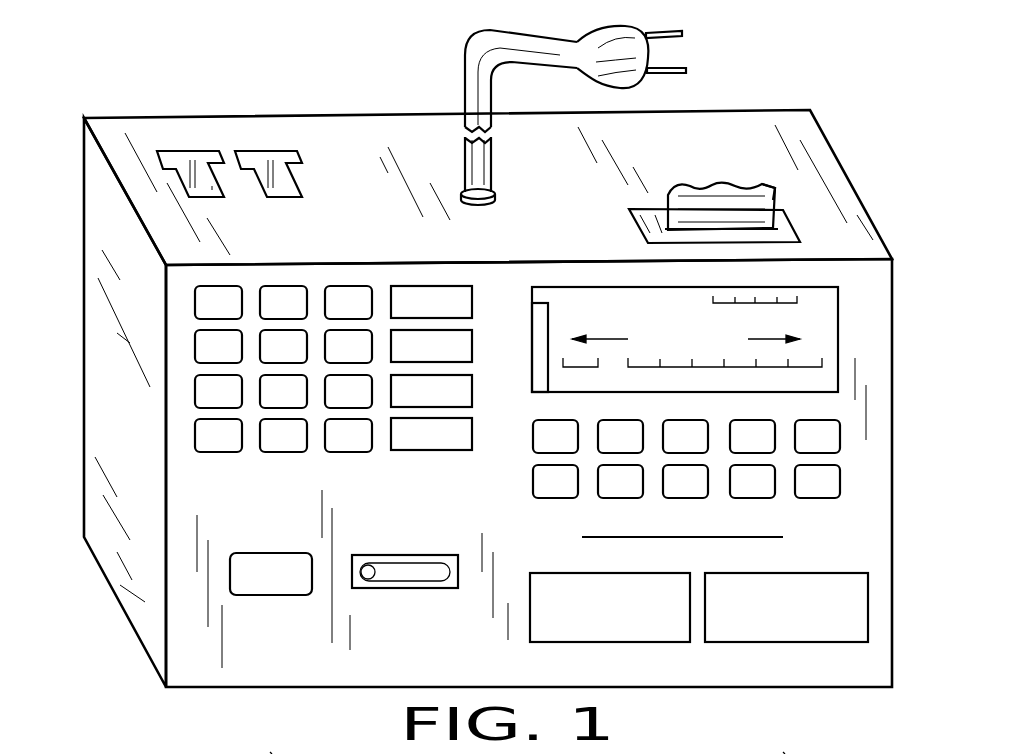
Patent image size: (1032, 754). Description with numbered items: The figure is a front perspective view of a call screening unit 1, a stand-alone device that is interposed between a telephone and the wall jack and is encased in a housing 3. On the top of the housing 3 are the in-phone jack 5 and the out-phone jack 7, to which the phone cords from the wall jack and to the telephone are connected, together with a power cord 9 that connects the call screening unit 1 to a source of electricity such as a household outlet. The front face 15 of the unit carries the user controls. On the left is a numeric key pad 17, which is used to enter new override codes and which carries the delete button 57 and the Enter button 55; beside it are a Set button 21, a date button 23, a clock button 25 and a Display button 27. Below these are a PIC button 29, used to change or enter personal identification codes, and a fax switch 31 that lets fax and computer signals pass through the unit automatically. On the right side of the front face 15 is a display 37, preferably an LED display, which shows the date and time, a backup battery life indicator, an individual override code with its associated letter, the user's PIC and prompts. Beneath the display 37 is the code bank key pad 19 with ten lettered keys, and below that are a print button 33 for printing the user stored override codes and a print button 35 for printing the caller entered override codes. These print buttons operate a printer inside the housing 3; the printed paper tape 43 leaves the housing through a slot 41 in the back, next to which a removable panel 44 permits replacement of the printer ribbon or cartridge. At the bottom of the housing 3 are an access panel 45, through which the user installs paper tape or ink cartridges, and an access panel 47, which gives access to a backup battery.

The call screening unit 1 is at (790, 88).
The housing 3 is at (827, 122).
The in-phone jack 5 is at (181, 148).
The out-phone jack 7 is at (243, 150).
The power cord 9 is at (470, 55).
The front face 15 is at (180, 331).
The numeric key pad 17 is at (290, 364).
The code bank key pad 19 is at (523, 459).
The Set button 21 is at (472, 390).
The date button 23 is at (472, 302).
The clock button 25 is at (472, 348).
The Display button 27 is at (472, 434).
The PIC button 29 is at (279, 553).
The fax switch 31 is at (398, 555).
The print button 33 is at (570, 573).
The print button 35 is at (801, 573).
The display 37 is at (838, 325).
The slot 41 is at (785, 221).
The printed paper tape 43 is at (775, 196).
The removable panel 44 is at (808, 238).
The access panel 45 is at (785, 753).
The access panel 47 is at (270, 752).
The Enter button 55 is at (362, 452).
The delete button 57 is at (197, 452).